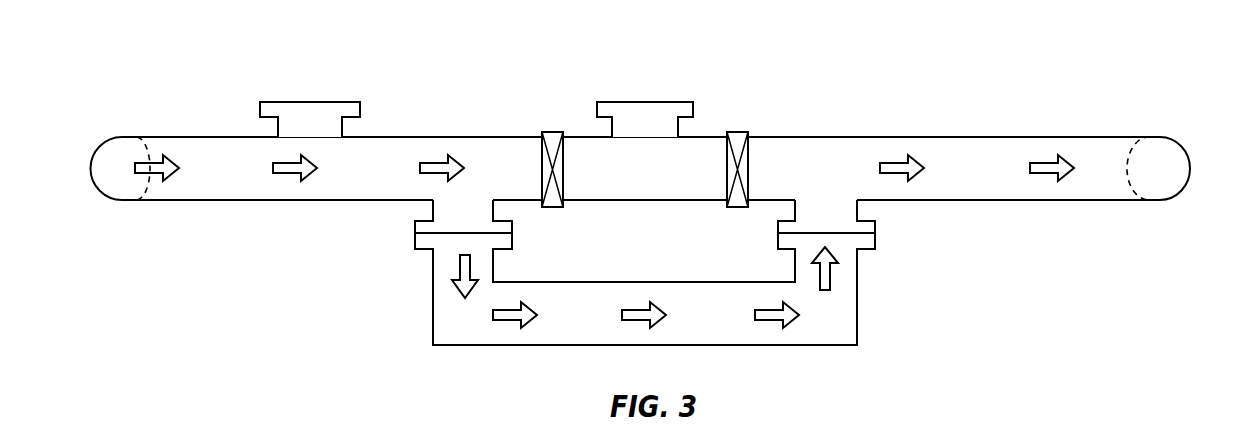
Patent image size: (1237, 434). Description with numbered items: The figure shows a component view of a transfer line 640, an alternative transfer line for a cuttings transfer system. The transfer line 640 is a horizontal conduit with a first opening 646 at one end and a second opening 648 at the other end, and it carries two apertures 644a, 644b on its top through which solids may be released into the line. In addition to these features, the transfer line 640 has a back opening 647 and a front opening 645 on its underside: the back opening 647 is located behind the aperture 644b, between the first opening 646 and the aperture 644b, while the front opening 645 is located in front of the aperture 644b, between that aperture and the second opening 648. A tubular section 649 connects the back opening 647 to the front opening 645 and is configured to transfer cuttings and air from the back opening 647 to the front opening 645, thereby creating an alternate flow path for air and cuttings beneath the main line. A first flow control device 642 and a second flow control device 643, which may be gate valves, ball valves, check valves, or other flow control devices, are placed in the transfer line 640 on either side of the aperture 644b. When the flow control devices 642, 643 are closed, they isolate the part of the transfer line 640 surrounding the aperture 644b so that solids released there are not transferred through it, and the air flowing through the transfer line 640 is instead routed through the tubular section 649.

The transfer line 640 is at (168, 40).
The first flow control device 642 is at (553, 132).
The second flow control device 643 is at (728, 132).
The aperture 644a is at (310, 102).
The aperture 644b is at (645, 102).
The front opening 645 is at (875, 233).
The first opening 646 is at (122, 150).
The back opening 647 is at (415, 233).
The second opening 648 is at (1162, 150).
The tubular section 649 is at (722, 345).